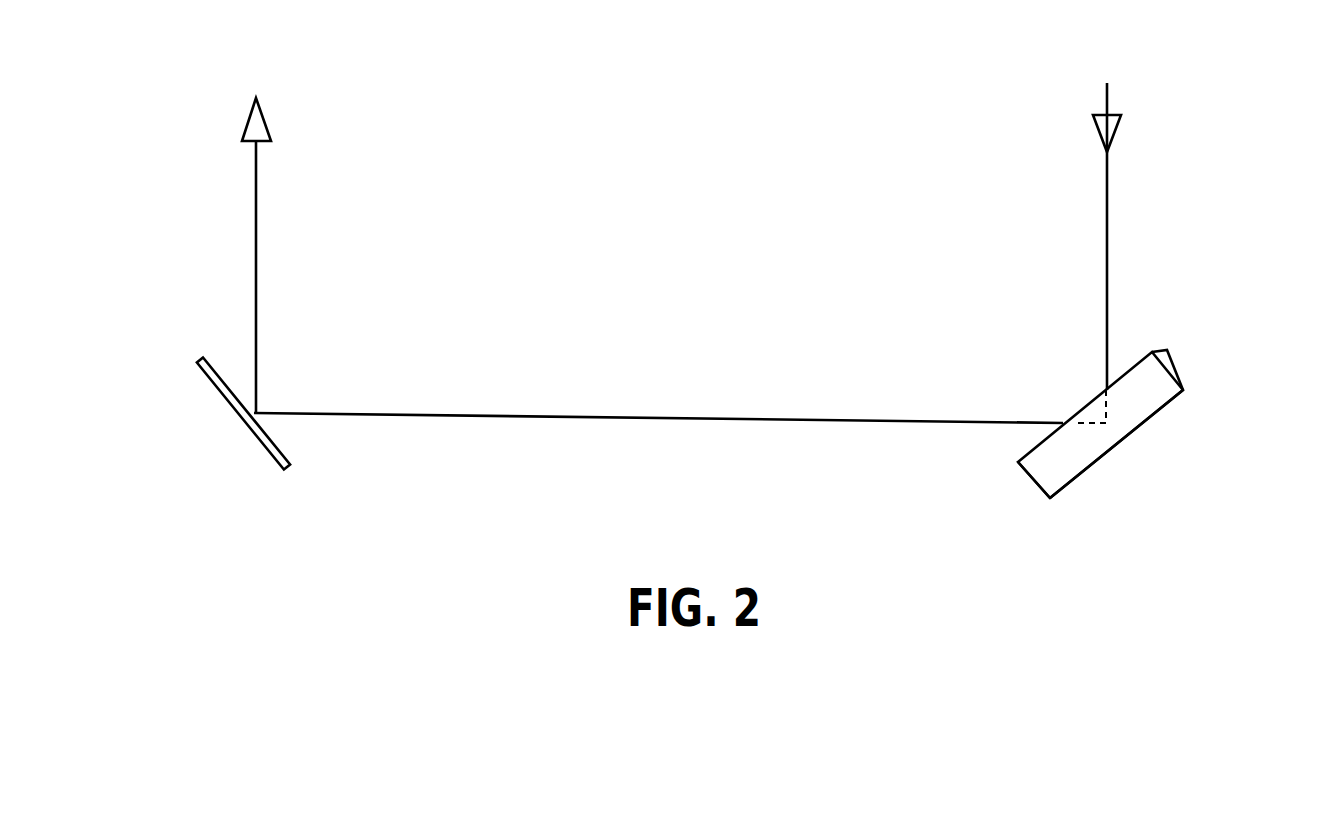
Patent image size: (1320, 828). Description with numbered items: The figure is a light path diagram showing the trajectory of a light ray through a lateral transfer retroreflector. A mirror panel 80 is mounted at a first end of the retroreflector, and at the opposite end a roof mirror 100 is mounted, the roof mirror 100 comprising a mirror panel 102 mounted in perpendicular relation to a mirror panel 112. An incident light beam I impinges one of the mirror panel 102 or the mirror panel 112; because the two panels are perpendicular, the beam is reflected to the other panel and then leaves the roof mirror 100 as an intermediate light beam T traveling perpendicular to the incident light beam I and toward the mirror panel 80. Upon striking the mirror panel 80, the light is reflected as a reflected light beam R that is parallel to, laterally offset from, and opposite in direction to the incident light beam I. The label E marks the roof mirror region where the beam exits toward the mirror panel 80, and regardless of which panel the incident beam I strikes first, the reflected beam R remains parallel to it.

The reflected light beam R is at (254, 256).
The incident light beam I is at (1103, 241).
The intermediate light beam T is at (699, 420).
The edge face of electro-optic element E is at (1160, 412).
The mirror panel 80 is at (254, 430).
The roof mirror 100 is at (1134, 464).
The mirror panel 102 is at (1172, 358).
The mirror panel 112 is at (1047, 467).